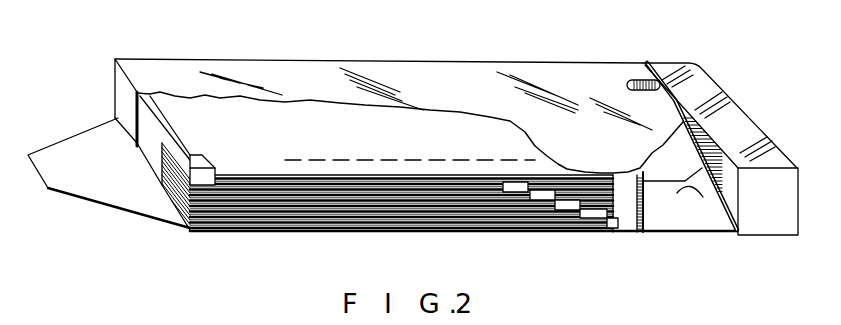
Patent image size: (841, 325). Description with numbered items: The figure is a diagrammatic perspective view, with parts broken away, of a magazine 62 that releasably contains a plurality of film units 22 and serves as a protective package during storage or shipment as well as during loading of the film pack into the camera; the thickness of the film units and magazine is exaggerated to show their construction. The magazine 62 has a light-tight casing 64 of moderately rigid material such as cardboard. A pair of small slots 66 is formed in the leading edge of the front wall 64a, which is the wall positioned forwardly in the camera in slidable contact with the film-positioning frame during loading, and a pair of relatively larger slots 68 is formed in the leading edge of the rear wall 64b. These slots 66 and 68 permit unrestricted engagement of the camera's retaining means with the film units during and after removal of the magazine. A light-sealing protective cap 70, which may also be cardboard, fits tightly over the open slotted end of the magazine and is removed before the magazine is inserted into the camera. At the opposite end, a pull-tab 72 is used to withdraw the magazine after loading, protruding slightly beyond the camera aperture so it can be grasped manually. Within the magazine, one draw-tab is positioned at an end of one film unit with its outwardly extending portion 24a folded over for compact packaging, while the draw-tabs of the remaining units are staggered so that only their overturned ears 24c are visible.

The film units 22 is at (322, 222).
The outwardly extending portion of draw-tab 24a is at (150, 137).
The overturned ears of draw-tab 24c is at (192, 182).
The magazine 62 is at (505, 233).
The light-tight casing 64 is at (630, 207).
The front wall 64a is at (450, 78).
The rear wall 64b is at (685, 217).
The small slots 66 is at (638, 80).
The larger slots 68 is at (703, 197).
The protective cap 70 is at (695, 88).
The pull-tab 72 is at (127, 190).